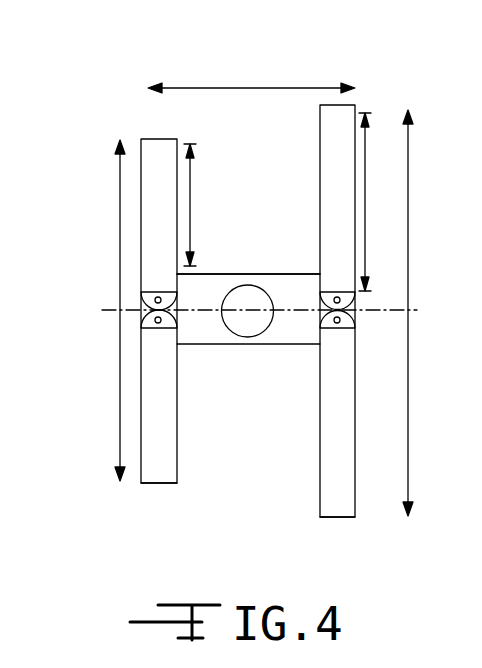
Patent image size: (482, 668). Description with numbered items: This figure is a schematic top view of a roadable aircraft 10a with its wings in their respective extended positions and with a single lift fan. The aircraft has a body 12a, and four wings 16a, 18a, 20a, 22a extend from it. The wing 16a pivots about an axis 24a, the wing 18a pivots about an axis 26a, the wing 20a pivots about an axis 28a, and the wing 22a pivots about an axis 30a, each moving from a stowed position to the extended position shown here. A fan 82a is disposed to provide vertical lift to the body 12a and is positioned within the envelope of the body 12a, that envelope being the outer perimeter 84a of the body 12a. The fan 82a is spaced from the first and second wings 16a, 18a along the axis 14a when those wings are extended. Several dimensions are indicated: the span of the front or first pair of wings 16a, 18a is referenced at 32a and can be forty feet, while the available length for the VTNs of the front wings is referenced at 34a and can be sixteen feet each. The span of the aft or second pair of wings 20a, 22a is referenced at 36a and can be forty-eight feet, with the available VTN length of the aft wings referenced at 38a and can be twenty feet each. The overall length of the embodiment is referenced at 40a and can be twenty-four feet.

The roadable aircraft 10a is at (182, 542).
The body 12a is at (292, 346).
The axis 14a is at (112, 310).
The wing 16a is at (158, 150).
The wing 18a is at (158, 470).
The wing 20a is at (332, 148).
The wing 22a is at (342, 505).
The axis 24a is at (156, 300).
The axis 26a is at (157, 319).
The axis 28a is at (340, 300).
The axis 30a is at (340, 320).
The span of the front pair of wings 32a is at (118, 421).
The available VTN length of the front wings 34a is at (190, 205).
The span of the aft pair of wings 36a is at (408, 160).
The available VTN length of the aft wings 38a is at (365, 198).
The length of the embodiment 40a is at (258, 88).
The fan 82a is at (245, 300).
The outer perimeter 84a is at (265, 274).